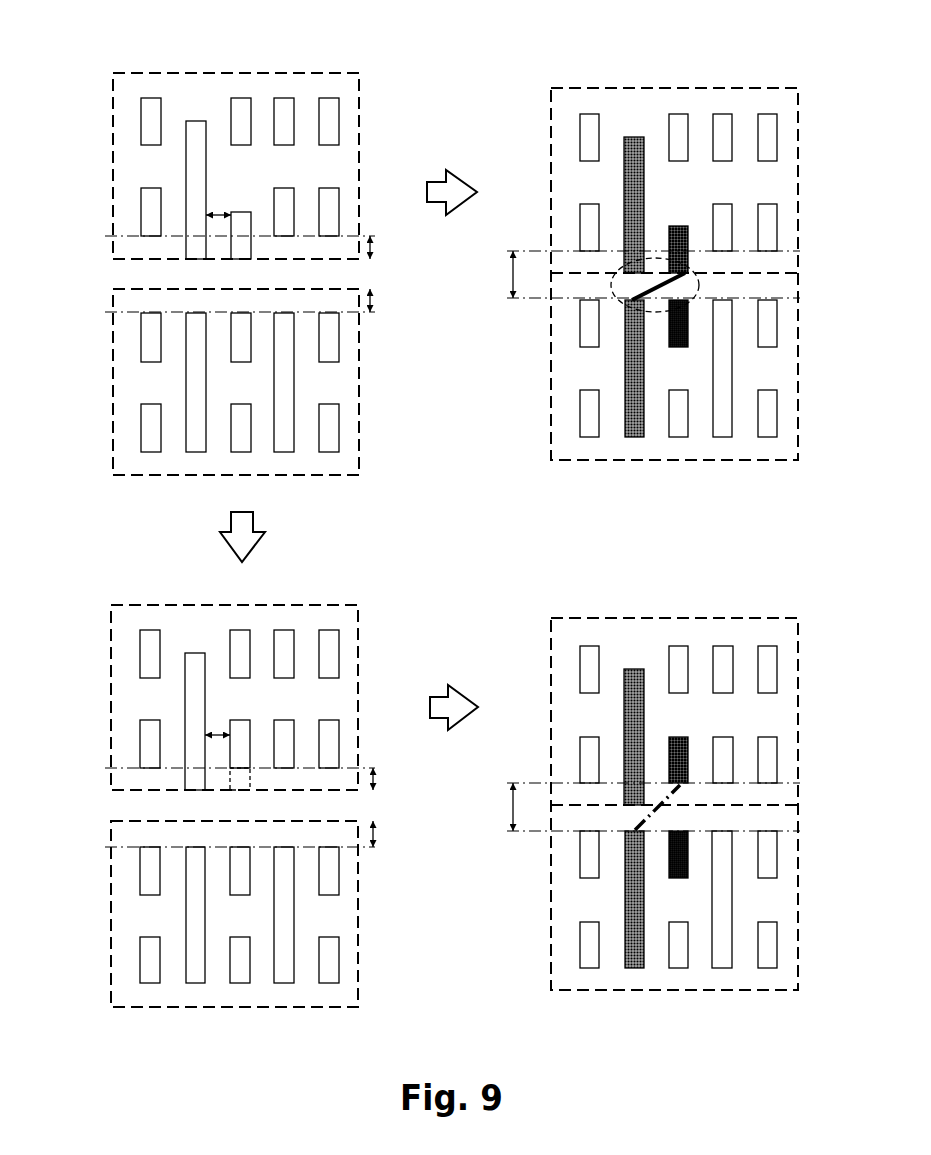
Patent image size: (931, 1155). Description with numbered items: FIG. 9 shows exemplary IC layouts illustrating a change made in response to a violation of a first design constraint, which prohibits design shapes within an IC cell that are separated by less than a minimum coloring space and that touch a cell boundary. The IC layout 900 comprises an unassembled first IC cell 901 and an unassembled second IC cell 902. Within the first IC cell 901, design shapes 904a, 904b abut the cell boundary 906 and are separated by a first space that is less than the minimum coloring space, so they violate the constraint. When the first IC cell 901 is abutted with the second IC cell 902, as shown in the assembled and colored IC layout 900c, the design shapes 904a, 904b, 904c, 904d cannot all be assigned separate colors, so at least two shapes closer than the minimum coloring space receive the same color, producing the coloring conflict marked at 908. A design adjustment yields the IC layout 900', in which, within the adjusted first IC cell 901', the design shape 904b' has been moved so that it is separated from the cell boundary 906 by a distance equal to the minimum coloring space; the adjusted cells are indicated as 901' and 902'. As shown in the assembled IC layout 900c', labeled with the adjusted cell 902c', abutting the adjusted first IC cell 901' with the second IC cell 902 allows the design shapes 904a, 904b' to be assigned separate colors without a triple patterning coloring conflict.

The IC layout 900 is at (215, 239).
The IC layout 900c is at (601, 231).
The IC layout 900' is at (212, 747).
The IC layout 900c' is at (601, 763).
The first IC cell 901 is at (454, 166).
The first IC cell 901' is at (452, 697).
The second IC cell 902 is at (454, 547).
The adjusted second layout region 902' is at (384, 592).
The assembled adjusted layout region 902c' is at (702, 793).
The design shape 904a is at (206, 172).
The design shape 904b is at (488, 242).
The design shape 904b' is at (489, 770).
The design shape 904c is at (250, 318).
The design shape 904d is at (206, 385).
The cell boundary 906 is at (124, 260).
The coloring conflict indicator 908 is at (611, 296).